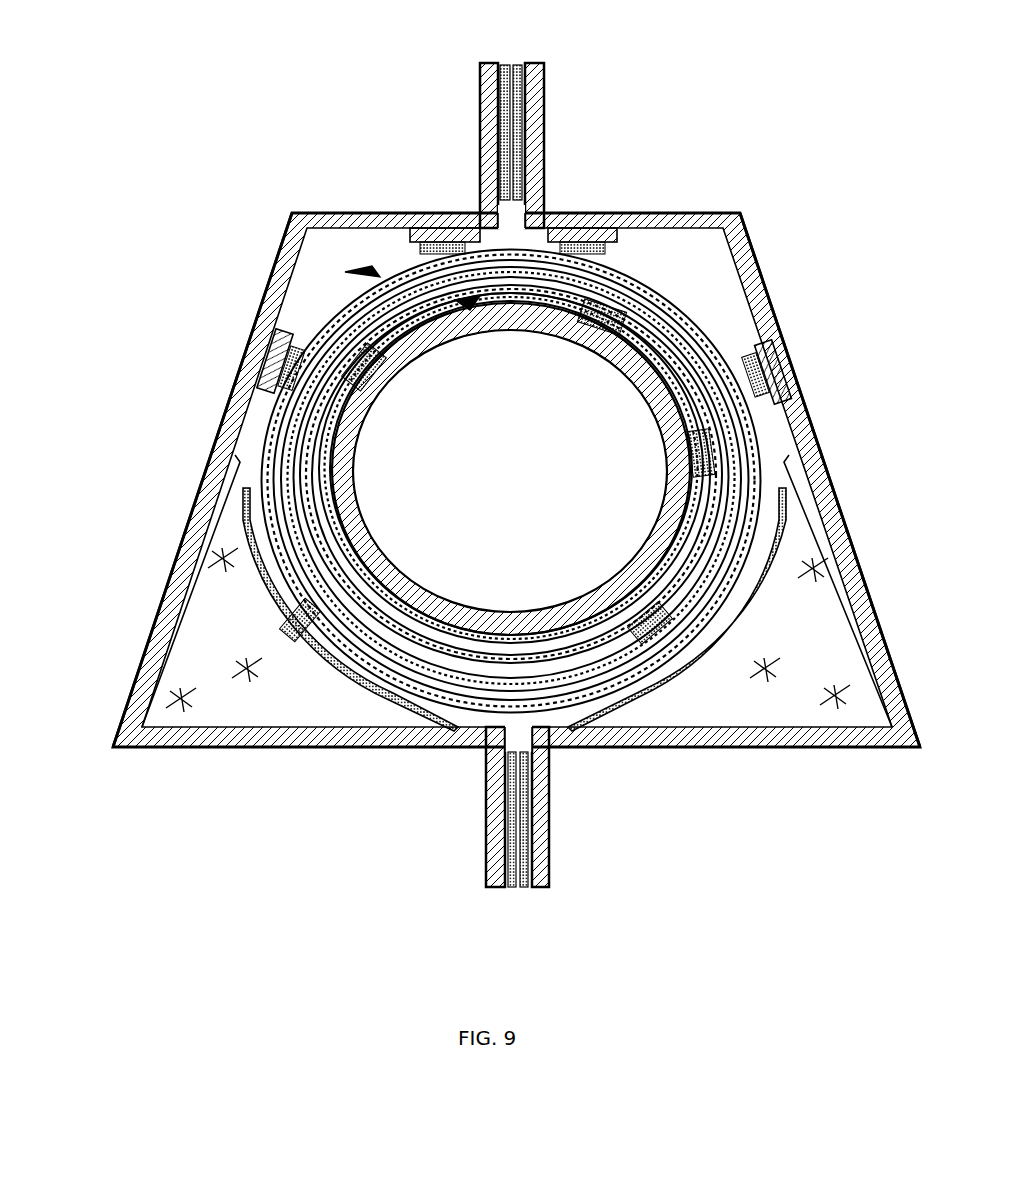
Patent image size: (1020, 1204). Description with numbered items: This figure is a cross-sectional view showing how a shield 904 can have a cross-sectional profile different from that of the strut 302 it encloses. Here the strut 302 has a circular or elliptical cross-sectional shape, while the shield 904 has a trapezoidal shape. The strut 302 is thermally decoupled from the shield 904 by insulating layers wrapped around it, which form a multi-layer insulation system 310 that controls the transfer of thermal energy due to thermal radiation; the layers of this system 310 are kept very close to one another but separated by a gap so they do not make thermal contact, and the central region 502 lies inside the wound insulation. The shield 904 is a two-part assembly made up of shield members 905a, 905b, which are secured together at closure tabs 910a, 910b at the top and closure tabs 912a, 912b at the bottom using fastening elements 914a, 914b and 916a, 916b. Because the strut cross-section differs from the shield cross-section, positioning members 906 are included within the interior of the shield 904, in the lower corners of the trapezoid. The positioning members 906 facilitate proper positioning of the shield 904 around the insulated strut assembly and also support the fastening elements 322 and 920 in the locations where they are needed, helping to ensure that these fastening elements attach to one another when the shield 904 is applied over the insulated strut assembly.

The shield 904 is at (160, 268).
The shield member 905a is at (292, 248).
The shield member 905b is at (840, 528).
The positioning member 906 is at (508, 630).
The closure tab 910a is at (480, 118).
The closure tab 910b is at (544, 118).
The closure tab 912a is at (486, 830).
The closure tab 912b is at (549, 832).
The fastening element 914a is at (503, 63).
The fastening element 914b is at (518, 63).
The fastening element 916a is at (512, 890).
The fastening element 916b is at (524, 890).
The fastening element 920 is at (440, 228).
The fastening element 322 is at (612, 246).
The multi-layer insulation system 310 is at (358, 306).
The strut 302 is at (350, 508).
The central opening 502 is at (628, 513).